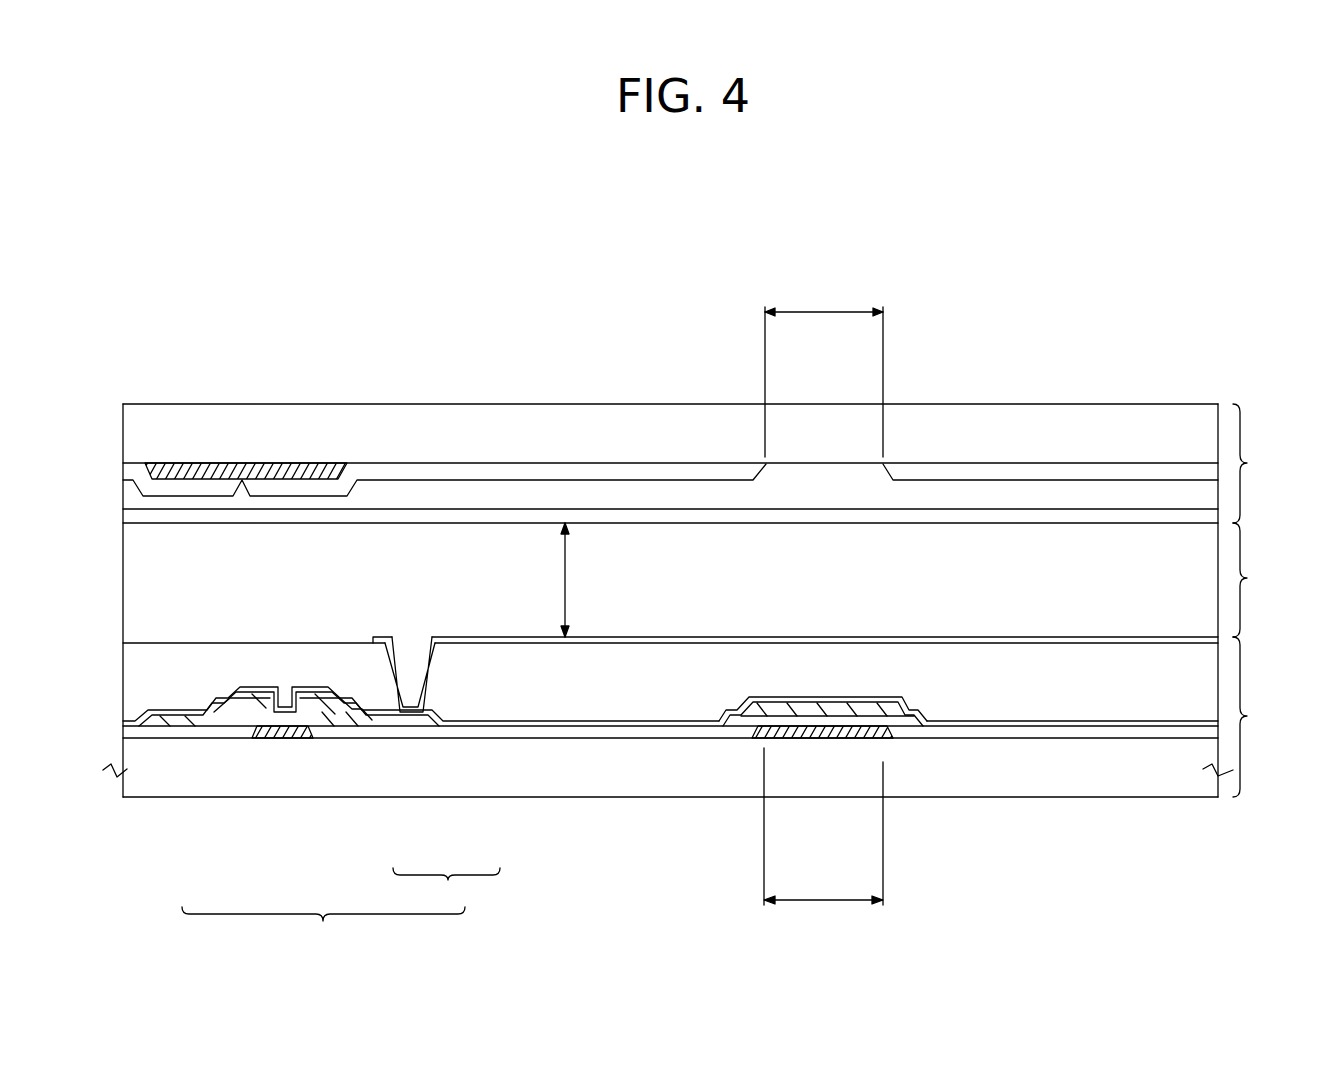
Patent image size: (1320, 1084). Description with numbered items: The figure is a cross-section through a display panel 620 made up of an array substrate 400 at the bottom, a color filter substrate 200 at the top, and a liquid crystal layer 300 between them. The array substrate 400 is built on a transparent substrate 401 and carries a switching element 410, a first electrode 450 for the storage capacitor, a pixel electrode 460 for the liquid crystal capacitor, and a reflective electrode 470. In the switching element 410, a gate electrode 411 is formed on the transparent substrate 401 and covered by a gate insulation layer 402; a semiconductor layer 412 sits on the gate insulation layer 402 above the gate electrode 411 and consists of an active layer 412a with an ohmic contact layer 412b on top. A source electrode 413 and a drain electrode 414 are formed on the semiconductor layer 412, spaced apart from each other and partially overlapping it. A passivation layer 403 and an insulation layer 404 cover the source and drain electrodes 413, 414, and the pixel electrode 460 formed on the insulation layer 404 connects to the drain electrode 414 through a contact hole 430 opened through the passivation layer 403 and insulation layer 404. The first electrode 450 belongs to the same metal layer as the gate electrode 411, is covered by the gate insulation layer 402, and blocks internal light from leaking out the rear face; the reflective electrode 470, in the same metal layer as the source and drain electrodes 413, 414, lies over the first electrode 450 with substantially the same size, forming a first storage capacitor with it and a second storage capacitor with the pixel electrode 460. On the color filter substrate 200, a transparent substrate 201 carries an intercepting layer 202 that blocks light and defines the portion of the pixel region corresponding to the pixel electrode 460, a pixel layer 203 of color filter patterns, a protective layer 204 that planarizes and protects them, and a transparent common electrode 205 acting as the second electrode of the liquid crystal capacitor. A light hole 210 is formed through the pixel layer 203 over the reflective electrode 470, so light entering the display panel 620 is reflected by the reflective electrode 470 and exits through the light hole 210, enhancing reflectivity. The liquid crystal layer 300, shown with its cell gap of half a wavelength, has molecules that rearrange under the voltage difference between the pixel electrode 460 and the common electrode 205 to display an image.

The display panel 620 is at (625, 259).
The color filter substrate 200 is at (668, 413).
The transparent substrate 201 is at (128, 421).
The intercepting layer 202 is at (128, 463).
The pixel layer 203 is at (128, 469).
The protective layer 204 is at (128, 497).
The common electrode 205 is at (128, 517).
The light hole 210 is at (828, 473).
The liquid crystal layer 300 is at (705, 580).
The array substrate 400 is at (668, 766).
The transparent substrate 401 is at (128, 781).
The gate insulation layer 402 is at (128, 738).
The passivation layer 403 is at (128, 722).
The insulation layer 404 is at (128, 665).
The switching element 410 is at (319, 821).
The gate electrode 411 is at (278, 736).
The semiconductor layer 412 is at (357, 803).
The active layer 412a is at (340, 718).
The ohmic contact layer 412b is at (347, 721).
The source electrode 413 is at (200, 720).
The drain electrode 414 is at (309, 697).
The contact hole 430 is at (419, 661).
The first electrode 450 is at (813, 731).
The pixel electrode 460 is at (648, 641).
The reflective electrode 470 is at (910, 719).